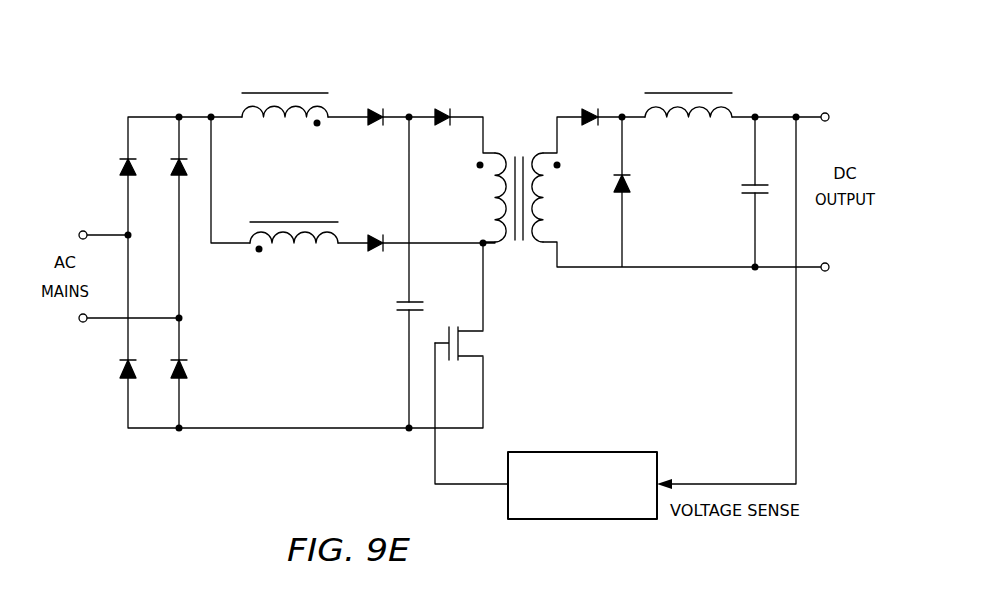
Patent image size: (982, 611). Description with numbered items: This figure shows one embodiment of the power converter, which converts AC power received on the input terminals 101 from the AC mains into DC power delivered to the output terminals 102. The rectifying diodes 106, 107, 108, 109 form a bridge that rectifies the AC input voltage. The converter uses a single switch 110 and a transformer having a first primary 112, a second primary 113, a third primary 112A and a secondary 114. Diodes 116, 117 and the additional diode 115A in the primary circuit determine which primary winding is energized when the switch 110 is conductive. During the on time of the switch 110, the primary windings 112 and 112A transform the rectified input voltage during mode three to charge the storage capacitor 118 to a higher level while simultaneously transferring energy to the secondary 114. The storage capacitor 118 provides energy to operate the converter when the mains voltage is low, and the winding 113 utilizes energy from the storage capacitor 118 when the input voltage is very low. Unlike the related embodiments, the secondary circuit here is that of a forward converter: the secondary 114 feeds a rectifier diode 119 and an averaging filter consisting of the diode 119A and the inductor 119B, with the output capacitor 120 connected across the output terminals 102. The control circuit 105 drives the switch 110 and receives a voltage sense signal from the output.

The input terminals 101 is at (78, 232).
The output terminals 102 is at (827, 108).
The control circuit 105 is at (631, 522).
The rectifier bridge diode 106 is at (118, 173).
The rectifier bridge diode 107 is at (170, 180).
The rectifier bridge diode 108 is at (123, 380).
The rectifier bridge diode 109 is at (187, 368).
The power field effect transistor 110 is at (462, 337).
The first primary winding 112 is at (242, 104).
The third primary winding 112A is at (325, 249).
The second primary winding 113 is at (497, 155).
The secondary winding 114 is at (543, 245).
The additional diode 115A is at (370, 235).
The diode 116 is at (437, 108).
The diode 117 is at (370, 108).
The storage capacitor 118 is at (403, 313).
The output rectifier diode 119 is at (585, 107).
The diode 119A is at (615, 182).
The inductor 119B is at (685, 92).
The output capacitor 120 is at (747, 183).